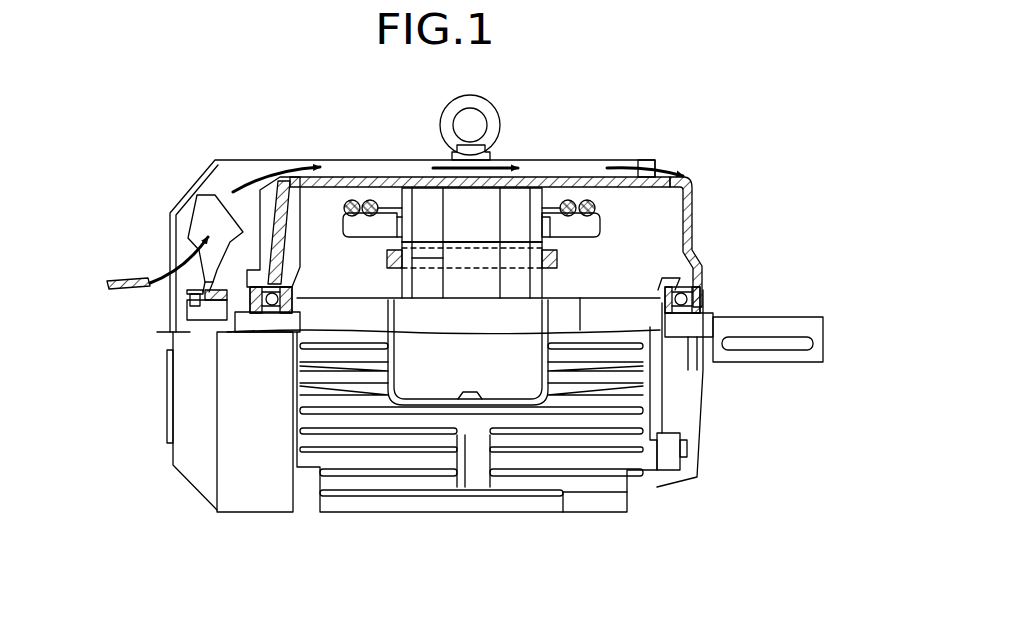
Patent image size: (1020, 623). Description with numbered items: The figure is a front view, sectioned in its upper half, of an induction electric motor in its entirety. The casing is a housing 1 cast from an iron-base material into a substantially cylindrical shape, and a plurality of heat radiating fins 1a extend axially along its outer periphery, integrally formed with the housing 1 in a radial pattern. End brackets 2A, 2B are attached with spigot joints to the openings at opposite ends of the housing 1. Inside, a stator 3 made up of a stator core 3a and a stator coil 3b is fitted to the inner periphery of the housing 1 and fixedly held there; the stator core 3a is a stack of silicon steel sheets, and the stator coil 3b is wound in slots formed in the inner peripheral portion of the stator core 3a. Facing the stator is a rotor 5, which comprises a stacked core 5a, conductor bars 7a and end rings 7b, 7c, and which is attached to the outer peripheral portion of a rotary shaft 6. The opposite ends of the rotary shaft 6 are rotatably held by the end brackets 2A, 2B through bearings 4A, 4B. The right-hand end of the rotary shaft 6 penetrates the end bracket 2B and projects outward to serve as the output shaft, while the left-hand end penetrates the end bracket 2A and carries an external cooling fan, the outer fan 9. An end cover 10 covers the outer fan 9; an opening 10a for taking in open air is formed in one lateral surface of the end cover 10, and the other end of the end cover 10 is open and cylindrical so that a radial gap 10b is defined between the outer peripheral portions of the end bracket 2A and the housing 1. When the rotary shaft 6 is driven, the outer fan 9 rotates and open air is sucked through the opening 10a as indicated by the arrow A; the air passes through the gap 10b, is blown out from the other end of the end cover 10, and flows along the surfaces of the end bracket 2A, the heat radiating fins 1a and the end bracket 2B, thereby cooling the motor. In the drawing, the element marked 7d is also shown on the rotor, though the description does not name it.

The housing 1 is at (573, 177).
The heat radiating fins 1a is at (532, 160).
The end bracket 2A is at (258, 203).
The end bracket 2B is at (688, 202).
The stator 3 is at (470, 222).
The stator core 3a is at (422, 210).
The stator coil 3b is at (593, 226).
The bearing 4A is at (290, 297).
The bearing 4B is at (662, 288).
The rotor 5 is at (473, 290).
The stacked core 5a is at (522, 290).
The rotary shaft 6 is at (797, 317).
The conductor bars 7a is at (422, 262).
The end ring 7b is at (390, 260).
The end ring 7c is at (562, 258).
The fan 7d is at (433, 290).
The outer fan 9 is at (207, 207).
The end cover 10 is at (226, 160).
The opening 10a is at (167, 236).
The radial gap 10b is at (288, 160).
The arrow A is at (127, 290).